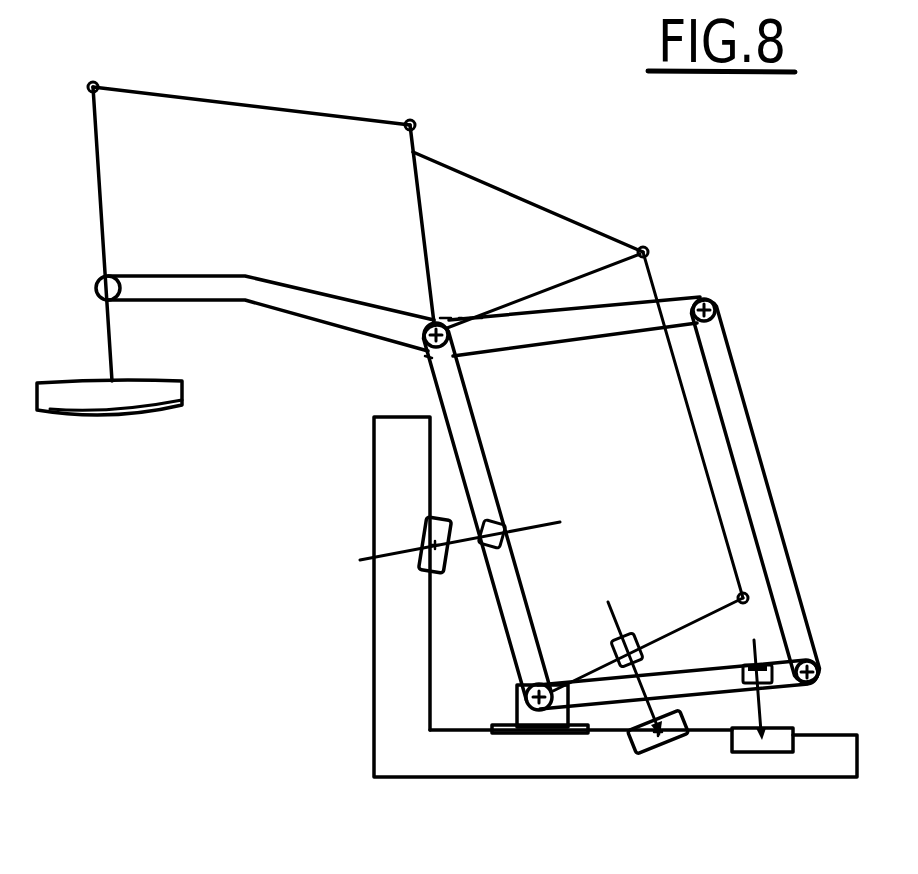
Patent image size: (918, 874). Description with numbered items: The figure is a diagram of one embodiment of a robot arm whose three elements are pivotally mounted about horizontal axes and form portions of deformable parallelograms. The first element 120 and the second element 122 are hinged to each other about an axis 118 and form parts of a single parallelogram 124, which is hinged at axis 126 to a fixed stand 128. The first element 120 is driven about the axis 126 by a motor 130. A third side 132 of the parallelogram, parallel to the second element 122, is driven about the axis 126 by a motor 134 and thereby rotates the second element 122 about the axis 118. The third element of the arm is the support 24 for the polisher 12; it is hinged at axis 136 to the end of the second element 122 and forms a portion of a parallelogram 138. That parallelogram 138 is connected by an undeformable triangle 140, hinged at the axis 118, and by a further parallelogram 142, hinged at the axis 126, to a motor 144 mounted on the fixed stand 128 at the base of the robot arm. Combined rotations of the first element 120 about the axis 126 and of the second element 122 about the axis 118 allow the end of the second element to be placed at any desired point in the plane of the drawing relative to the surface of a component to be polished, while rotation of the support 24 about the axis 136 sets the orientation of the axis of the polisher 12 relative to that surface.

The polisher 12 is at (70, 380).
The support 24 is at (99, 185).
The axis 118 is at (427, 345).
The first element 120 is at (492, 480).
The second element 122 is at (356, 299).
The parallelogram 124 is at (746, 405).
The axis 126 is at (518, 702).
The fixed stand 128 is at (374, 752).
The motor 130 is at (426, 553).
The third side 132 is at (743, 665).
The motor 134 is at (794, 731).
The axis 136 is at (98, 284).
The parallelogram 138 is at (294, 108).
The undeformable triangle 140 is at (540, 207).
The parallelogram 142 is at (692, 468).
The motor 144 is at (655, 745).